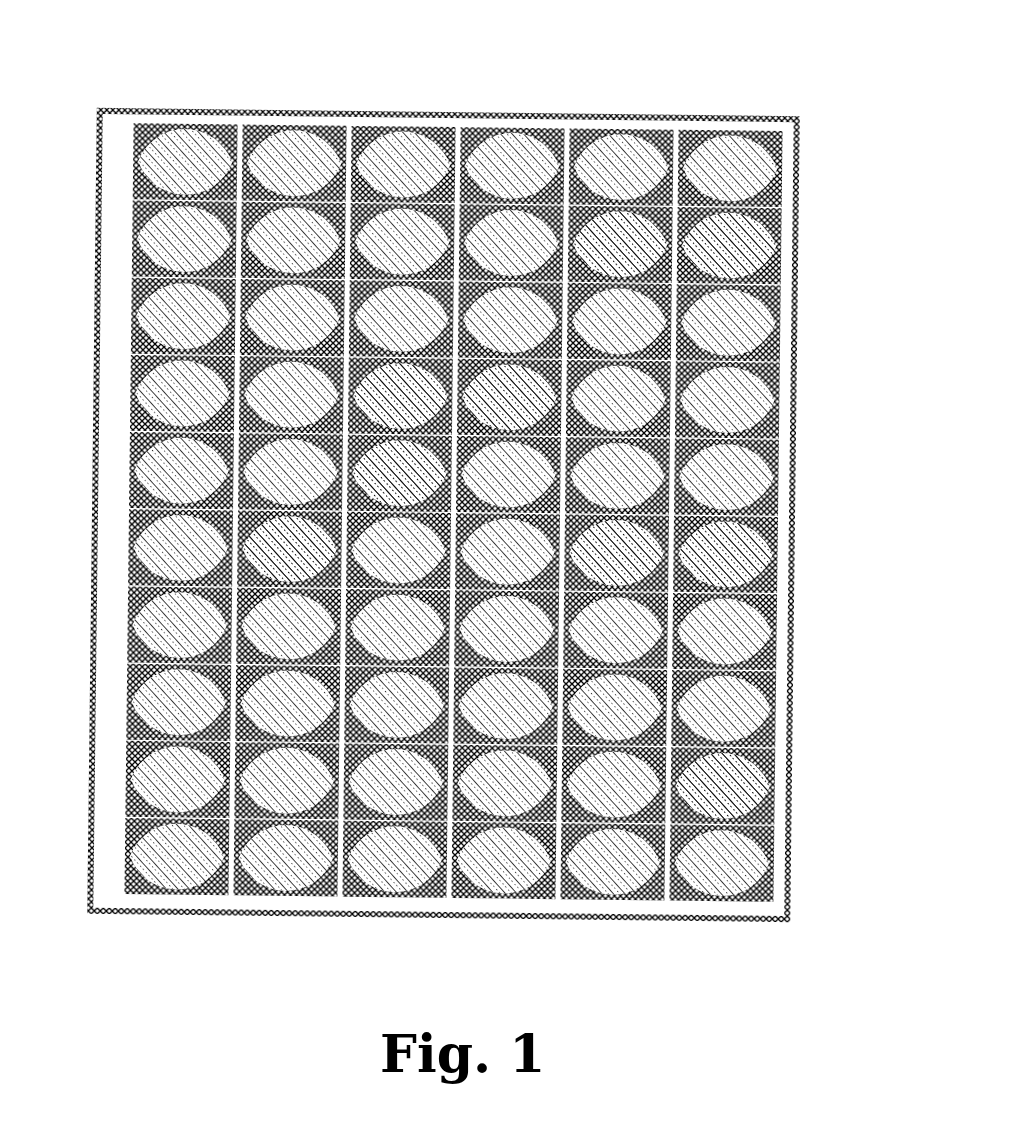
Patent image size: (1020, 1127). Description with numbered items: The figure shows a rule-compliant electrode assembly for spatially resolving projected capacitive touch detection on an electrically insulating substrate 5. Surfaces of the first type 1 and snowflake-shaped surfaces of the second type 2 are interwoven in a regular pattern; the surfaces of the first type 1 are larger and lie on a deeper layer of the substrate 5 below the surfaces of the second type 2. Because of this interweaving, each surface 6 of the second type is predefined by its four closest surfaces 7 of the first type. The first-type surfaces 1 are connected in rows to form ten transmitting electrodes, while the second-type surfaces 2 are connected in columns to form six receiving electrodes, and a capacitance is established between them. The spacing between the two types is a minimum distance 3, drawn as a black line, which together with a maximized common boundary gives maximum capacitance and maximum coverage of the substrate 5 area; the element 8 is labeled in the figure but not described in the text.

The surfaces of the first type 1 is at (730, 788).
The surfaces of the second type 2 is at (687, 148).
The minimum distance 3 is at (786, 512).
The electrically insulating substrate 5 is at (788, 890).
The surface of the second type 6 is at (352, 498).
The closest surfaces of the first type 7 is at (497, 402).
The lens surface 8 is at (597, 258).